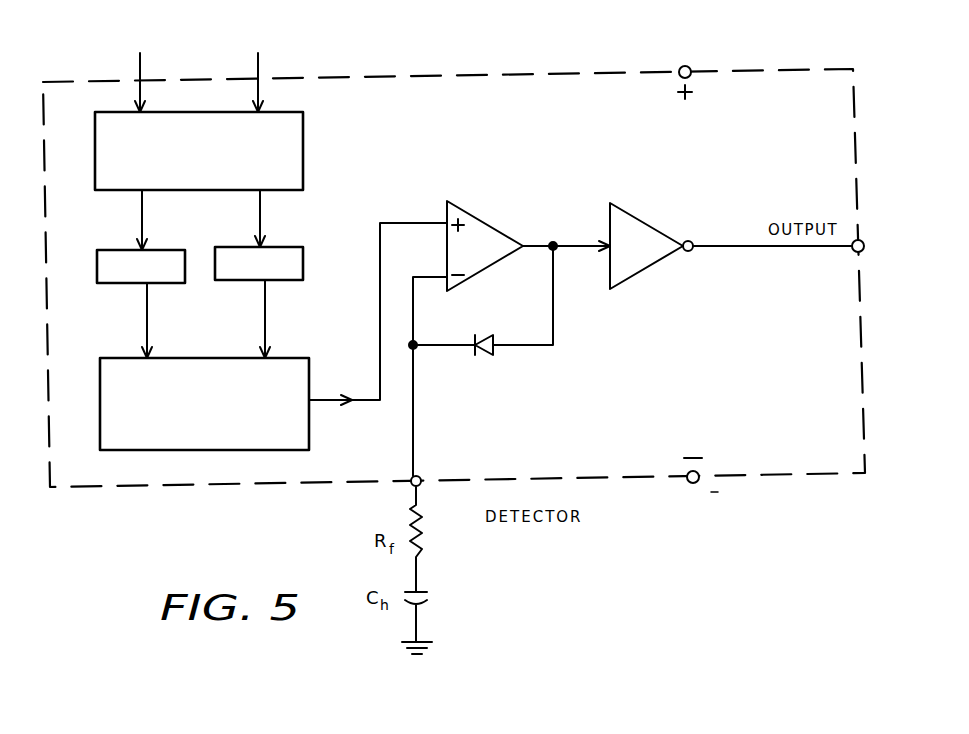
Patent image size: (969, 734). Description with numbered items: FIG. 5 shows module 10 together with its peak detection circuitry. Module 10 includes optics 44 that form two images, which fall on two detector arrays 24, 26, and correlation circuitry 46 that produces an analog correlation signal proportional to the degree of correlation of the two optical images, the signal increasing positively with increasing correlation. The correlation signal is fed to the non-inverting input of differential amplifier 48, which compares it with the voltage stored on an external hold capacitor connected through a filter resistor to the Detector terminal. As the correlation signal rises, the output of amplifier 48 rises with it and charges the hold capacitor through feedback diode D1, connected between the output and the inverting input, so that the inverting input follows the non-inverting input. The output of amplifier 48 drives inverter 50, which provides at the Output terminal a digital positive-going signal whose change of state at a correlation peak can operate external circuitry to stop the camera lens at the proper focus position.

The module 10 is at (477, 73).
The optics 44 is at (303, 141).
The detector array 24 is at (158, 250).
The detector array 26 is at (290, 247).
The correlation circuitry 46 is at (287, 358).
The differential amplifier 48 is at (483, 220).
The inverter 50 is at (628, 208).
The diode D1 is at (482, 333).